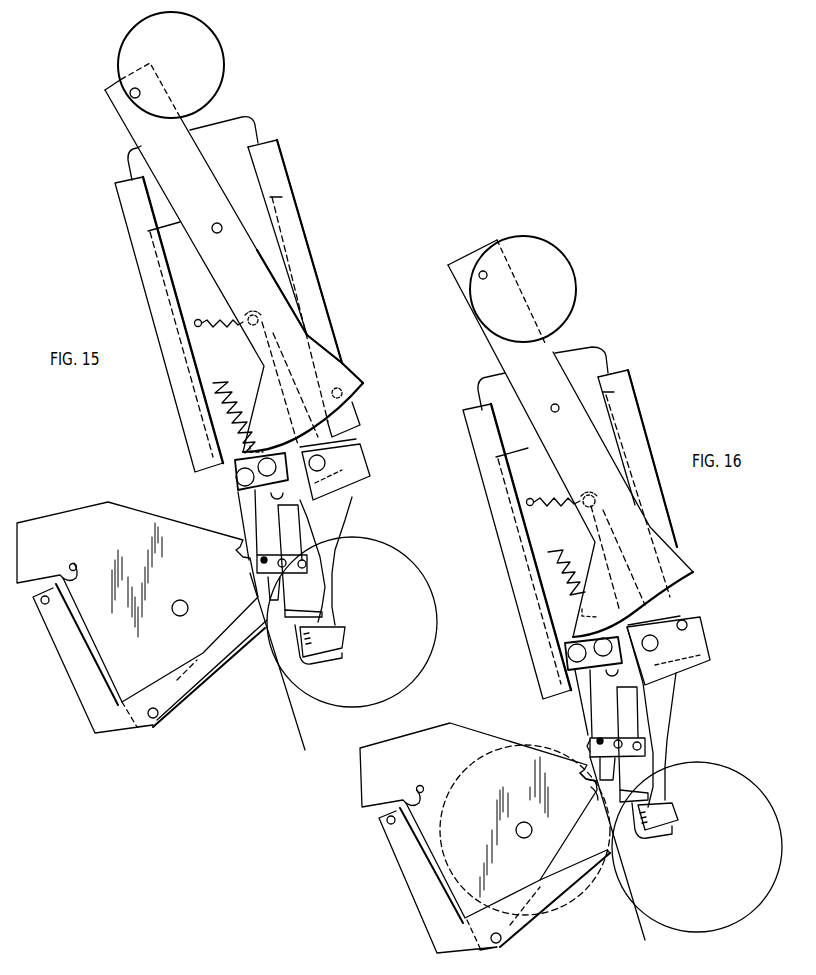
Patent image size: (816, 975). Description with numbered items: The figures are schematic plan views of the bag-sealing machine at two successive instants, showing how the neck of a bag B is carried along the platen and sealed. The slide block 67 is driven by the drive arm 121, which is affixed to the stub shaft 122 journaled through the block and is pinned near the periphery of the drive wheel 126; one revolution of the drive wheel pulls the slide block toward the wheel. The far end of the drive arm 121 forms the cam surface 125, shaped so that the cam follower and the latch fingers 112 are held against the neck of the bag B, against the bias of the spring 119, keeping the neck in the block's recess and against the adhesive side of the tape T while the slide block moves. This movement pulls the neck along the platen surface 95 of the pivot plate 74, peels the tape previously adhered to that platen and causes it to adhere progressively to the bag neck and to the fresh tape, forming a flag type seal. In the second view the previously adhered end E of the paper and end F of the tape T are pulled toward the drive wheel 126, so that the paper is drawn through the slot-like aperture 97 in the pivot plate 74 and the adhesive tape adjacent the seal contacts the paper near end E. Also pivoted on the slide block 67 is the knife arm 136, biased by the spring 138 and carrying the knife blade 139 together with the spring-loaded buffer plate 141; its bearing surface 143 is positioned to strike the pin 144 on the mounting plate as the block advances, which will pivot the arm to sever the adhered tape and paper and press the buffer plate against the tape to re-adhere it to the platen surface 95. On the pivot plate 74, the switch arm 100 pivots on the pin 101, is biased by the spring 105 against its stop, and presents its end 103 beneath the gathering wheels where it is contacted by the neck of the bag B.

In FIG. 15, the drive wheel 126 is at (197, 50).
In FIG. 16, the drive wheel 126 is at (553, 263).
In FIG. 15, the drive arm 121 is at (178, 130).
In FIG. 16, the drive arm 121 is at (547, 352).
In FIG. 15, the stub shaft 122 is at (221, 226).
In FIG. 16, the stub shaft 122 is at (558, 406).
In FIG. 16, the slide block 67 is at (593, 400).
In FIG. 15, the spring 138 is at (222, 317).
In FIG. 16, the spring 138 is at (560, 497).
In FIG. 15, the spring 119 is at (208, 369).
In FIG. 16, the spring 119 is at (563, 567).
In FIG. 15, the pin 144 is at (342, 388).
In FIG. 16, the pin 144 is at (688, 624).
In FIG. 15, the cam surface 125 is at (310, 447).
In FIG. 16, the cam surface 125 is at (632, 626).
In FIG. 15, the bearing surface 143 is at (368, 452).
In FIG. 16, the bearing surface 143 is at (703, 633).
In FIG. 15, the knife arm 136 is at (338, 505).
In FIG. 16, the knife arm 136 is at (668, 698).
In FIG. 15, the knife blade 139 is at (288, 596).
In FIG. 16, the knife blade 139 is at (619, 788).
In FIG. 15, the buffer plate 141 is at (312, 632).
In FIG. 16, the buffer plate 141 is at (645, 803).
In FIG. 15, the pivot plate 74 is at (183, 537).
In FIG. 16, the pivot plate 74 is at (462, 740).
In FIG. 15, the spring 105 is at (78, 563).
In FIG. 16, the spring 105 is at (416, 784).
In FIG. 15, the switch arm 100 is at (103, 725).
In FIG. 16, the switch arm 100 is at (440, 930).
In FIG. 15, the pin 101 is at (154, 720).
In FIG. 16, the pin 101 is at (495, 944).
In FIG. 15, the end of switch arm 103 is at (220, 657).
In FIG. 16, the end of switch arm 103 is at (558, 890).
In FIG. 15, the platen surface 95 is at (252, 565).
In FIG. 16, the platen surface 95 is at (600, 823).
In FIG. 16, the latch fingers 112 is at (589, 740).
In FIG. 16, the aperture 97 is at (591, 790).
In FIG. 15, the bag B is at (265, 559).
In FIG. 16, the bag B is at (601, 739).
In FIG. 16, the adhered end of paper E is at (585, 782).
In FIG. 16, the end of tape F is at (588, 744).
In FIG. 15, the tape T is at (303, 742).
In FIG. 16, the tape T is at (633, 910).